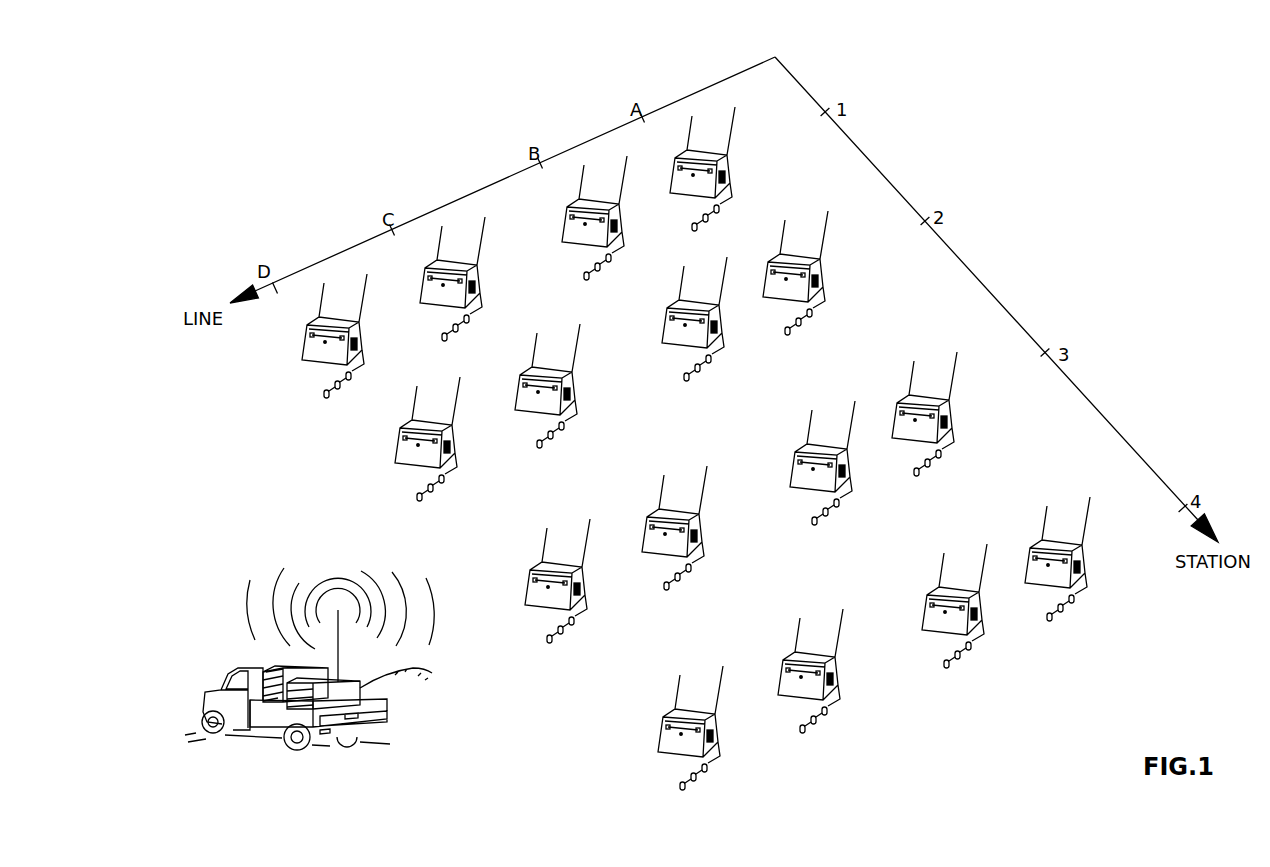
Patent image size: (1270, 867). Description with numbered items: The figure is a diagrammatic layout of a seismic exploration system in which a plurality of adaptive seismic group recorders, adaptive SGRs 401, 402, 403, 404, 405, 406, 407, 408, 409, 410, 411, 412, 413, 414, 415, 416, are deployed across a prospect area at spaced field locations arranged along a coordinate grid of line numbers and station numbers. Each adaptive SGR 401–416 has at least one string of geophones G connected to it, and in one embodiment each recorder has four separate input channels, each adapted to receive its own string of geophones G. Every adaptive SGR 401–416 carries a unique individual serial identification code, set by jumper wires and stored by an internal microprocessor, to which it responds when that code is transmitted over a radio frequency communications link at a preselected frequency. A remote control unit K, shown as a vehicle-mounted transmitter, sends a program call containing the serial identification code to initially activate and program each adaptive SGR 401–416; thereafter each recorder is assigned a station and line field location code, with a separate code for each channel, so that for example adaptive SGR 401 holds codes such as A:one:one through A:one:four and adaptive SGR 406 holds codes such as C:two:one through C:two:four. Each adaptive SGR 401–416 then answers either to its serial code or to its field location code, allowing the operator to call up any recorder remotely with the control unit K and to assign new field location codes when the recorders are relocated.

The adaptive SGR 401 is at (312, 337).
The adaptive SGR 402 is at (395, 451).
The adaptive SGR 403 is at (526, 592).
The adaptive SGR 404 is at (659, 740).
The adaptive SGR 405 is at (421, 290).
The adaptive SGR 406 is at (518, 388).
The adaptive SGR 407 is at (643, 531).
The adaptive SGR 408 is at (779, 681).
The adaptive SGR 409 is at (565, 228).
The adaptive SGR 410 is at (660, 326).
The adaptive SGR 411 is at (791, 471).
The adaptive SGR 412 is at (922, 620).
The adaptive SGR 413 is at (668, 178).
The adaptive SGR 414 is at (765, 278).
The adaptive SGR 415 is at (893, 424).
The adaptive SGR 416 is at (1026, 566).
The string of geophones G is at (352, 375).
The remote control unit K is at (432, 710).